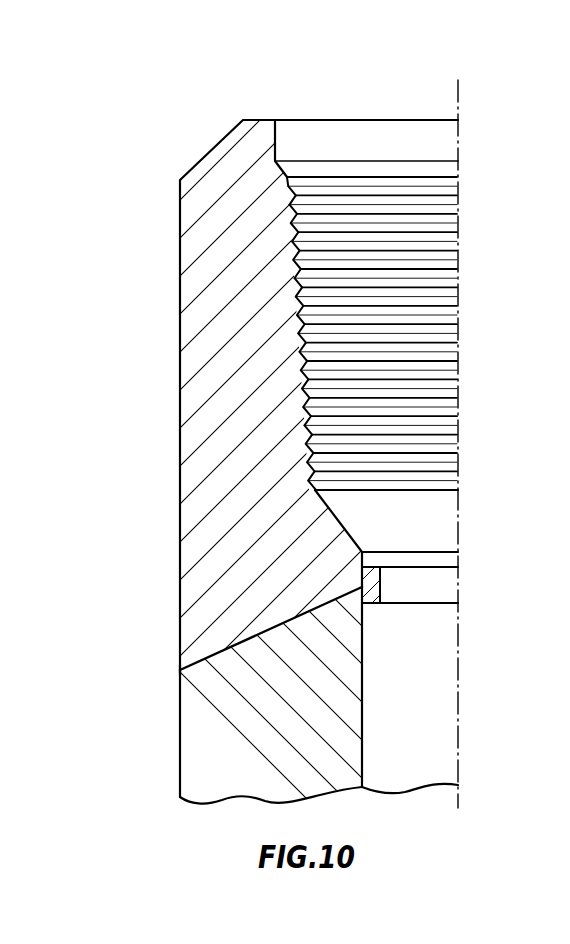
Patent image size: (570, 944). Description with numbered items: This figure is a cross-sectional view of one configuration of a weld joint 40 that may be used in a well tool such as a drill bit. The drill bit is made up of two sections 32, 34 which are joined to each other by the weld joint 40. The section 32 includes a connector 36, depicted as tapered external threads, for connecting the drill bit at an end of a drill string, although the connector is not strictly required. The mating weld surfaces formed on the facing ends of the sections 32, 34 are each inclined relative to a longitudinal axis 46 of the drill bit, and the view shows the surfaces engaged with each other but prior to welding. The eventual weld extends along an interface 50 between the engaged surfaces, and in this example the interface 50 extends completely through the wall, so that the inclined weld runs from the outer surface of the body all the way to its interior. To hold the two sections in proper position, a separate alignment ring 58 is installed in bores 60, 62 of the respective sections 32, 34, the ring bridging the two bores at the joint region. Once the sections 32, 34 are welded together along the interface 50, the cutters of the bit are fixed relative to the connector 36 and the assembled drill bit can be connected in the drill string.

The section 32 is at (176, 412).
The section 34 is at (176, 726).
The connector 36 is at (302, 313).
The weld joint 40 is at (166, 671).
The longitudinal axis 46 is at (458, 97).
The interface 50 is at (266, 627).
The alignment ring 58 is at (442, 566).
The bore 60 is at (366, 558).
The bore 62 is at (366, 652).